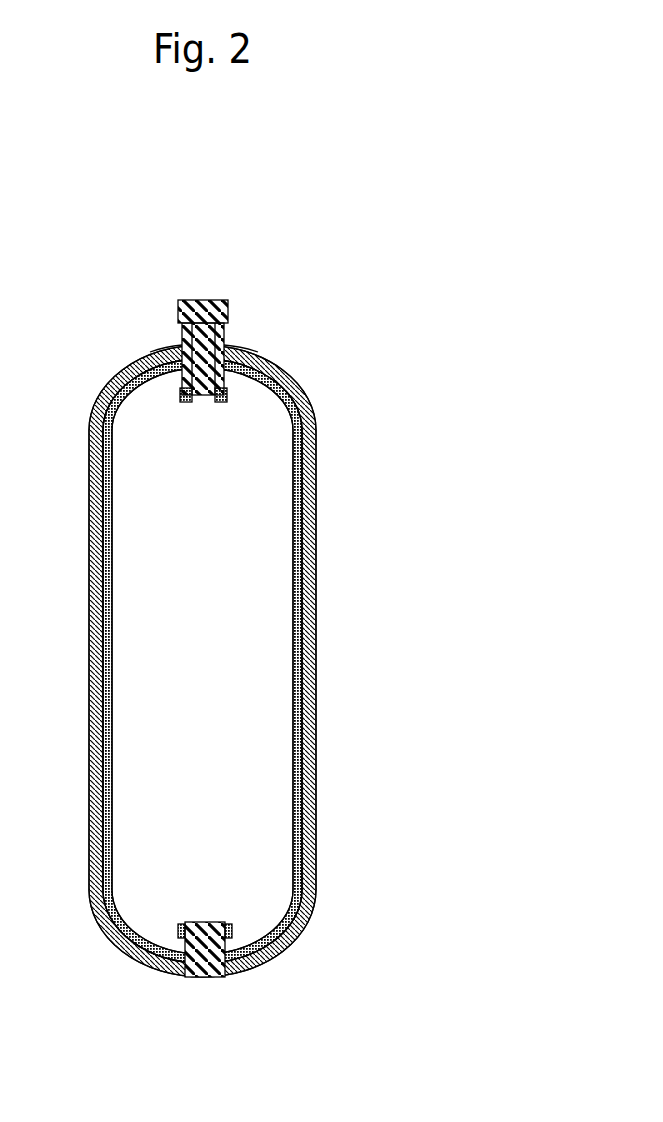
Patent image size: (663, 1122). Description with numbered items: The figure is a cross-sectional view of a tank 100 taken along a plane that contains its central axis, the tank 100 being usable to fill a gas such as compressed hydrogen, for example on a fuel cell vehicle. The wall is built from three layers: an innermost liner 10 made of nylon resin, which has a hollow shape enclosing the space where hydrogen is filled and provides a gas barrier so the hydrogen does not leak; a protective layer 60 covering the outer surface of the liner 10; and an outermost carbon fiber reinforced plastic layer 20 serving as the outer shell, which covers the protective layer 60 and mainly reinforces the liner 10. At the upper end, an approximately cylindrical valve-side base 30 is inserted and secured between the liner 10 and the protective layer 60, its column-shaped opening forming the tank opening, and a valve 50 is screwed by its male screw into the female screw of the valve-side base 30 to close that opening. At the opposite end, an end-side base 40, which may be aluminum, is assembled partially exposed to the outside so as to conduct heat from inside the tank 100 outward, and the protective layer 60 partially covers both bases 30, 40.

The tank 100 is at (315, 262).
The liner 10 is at (297, 627).
The carbon fiber reinforced plastic layer 20 is at (316, 517).
The valve-side base 30 is at (240, 364).
The end-side base 40 is at (205, 977).
The valve 50 is at (226, 312).
The protective layer 60 is at (304, 573).